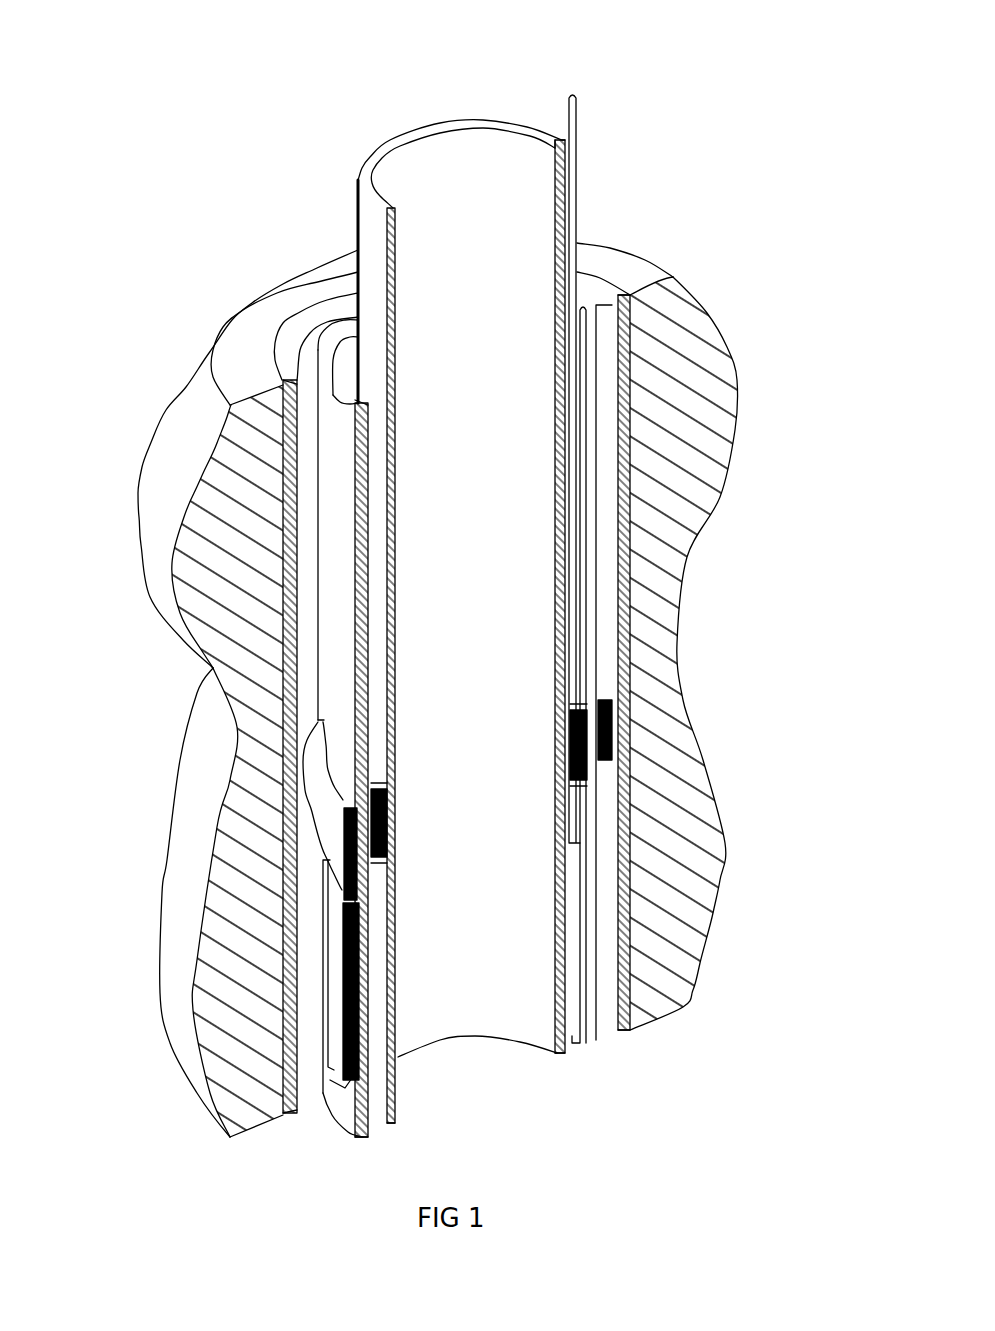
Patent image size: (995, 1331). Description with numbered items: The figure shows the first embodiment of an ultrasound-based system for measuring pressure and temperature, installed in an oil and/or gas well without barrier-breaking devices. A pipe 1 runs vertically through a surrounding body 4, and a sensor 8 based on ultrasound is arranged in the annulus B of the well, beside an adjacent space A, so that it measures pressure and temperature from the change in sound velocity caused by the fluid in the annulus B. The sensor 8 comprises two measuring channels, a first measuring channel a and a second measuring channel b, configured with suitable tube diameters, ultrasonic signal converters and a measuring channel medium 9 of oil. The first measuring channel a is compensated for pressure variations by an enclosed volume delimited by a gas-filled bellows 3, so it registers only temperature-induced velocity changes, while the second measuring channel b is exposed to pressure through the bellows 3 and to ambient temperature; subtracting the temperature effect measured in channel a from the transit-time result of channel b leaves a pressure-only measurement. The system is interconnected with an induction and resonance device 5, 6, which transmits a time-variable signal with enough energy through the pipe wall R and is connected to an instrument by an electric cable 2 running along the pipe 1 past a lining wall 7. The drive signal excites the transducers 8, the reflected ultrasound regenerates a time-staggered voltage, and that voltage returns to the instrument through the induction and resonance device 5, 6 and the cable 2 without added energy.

The pipe 1 is at (484, 116).
The electric cable 2 is at (579, 206).
The bellows 3 is at (591, 416).
The housing block 4 is at (648, 531).
The induction and resonance device 5 is at (368, 786).
The induction and resonance device 6 is at (330, 828).
The sleeve wall 7 is at (628, 995).
The sensor 8 is at (323, 807).
The measuring channel medium 9 is at (337, 925).
The pipe wall R is at (357, 176).
The annular chamber A is at (348, 354).
The annulus B is at (303, 366).
The first measuring channel a is at (337, 1088).
The second measuring channel b is at (327, 974).